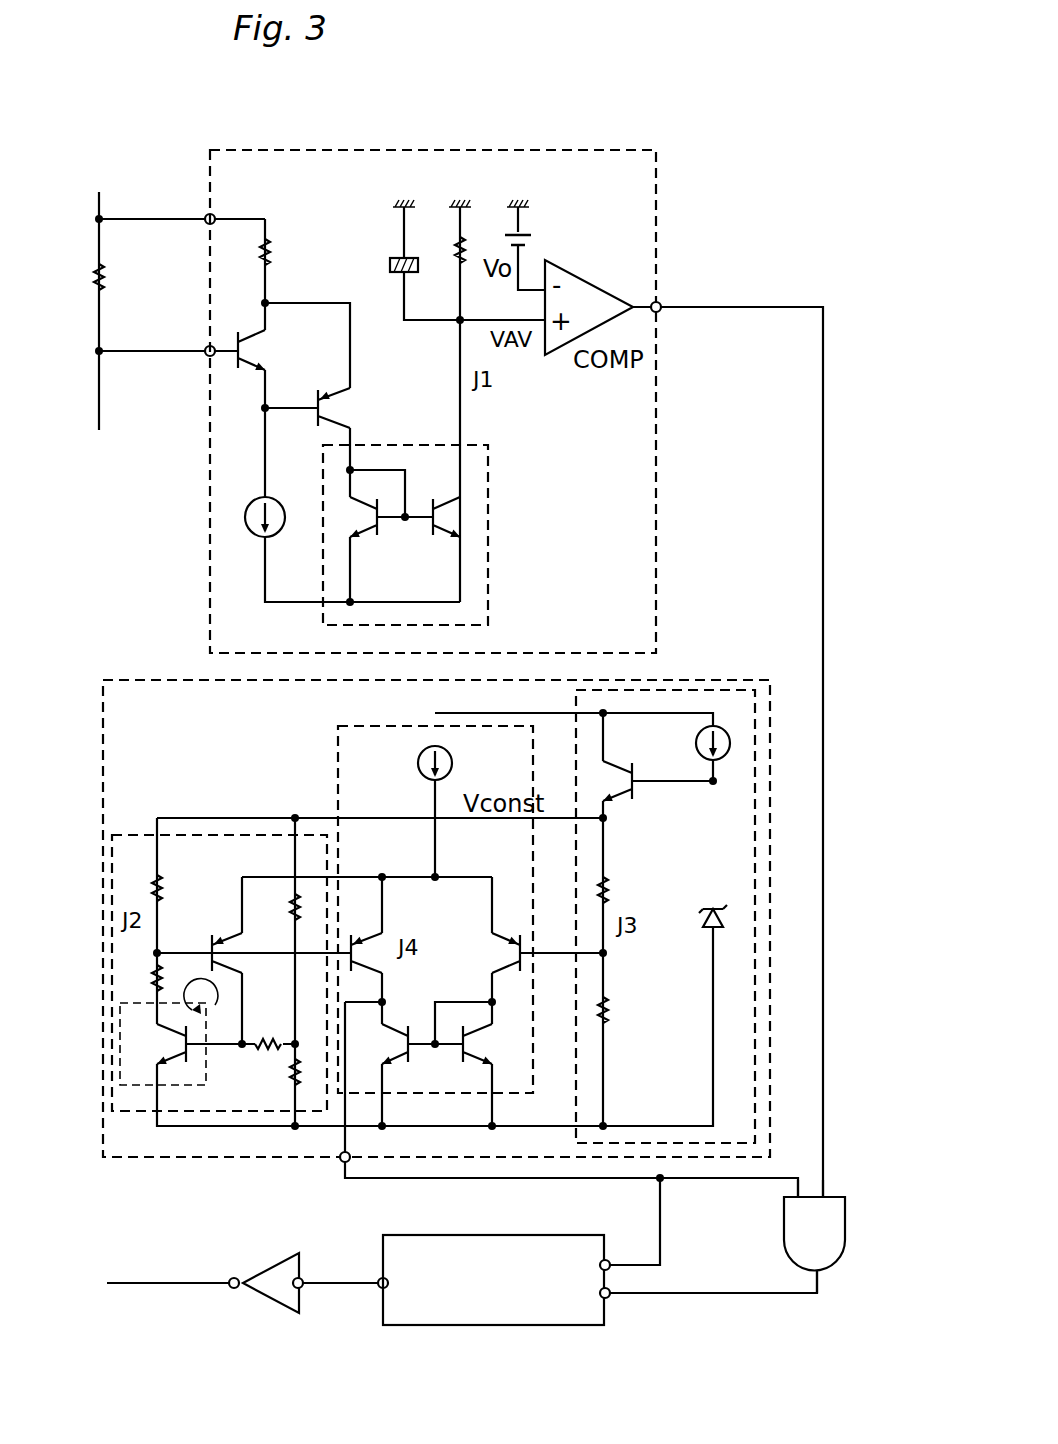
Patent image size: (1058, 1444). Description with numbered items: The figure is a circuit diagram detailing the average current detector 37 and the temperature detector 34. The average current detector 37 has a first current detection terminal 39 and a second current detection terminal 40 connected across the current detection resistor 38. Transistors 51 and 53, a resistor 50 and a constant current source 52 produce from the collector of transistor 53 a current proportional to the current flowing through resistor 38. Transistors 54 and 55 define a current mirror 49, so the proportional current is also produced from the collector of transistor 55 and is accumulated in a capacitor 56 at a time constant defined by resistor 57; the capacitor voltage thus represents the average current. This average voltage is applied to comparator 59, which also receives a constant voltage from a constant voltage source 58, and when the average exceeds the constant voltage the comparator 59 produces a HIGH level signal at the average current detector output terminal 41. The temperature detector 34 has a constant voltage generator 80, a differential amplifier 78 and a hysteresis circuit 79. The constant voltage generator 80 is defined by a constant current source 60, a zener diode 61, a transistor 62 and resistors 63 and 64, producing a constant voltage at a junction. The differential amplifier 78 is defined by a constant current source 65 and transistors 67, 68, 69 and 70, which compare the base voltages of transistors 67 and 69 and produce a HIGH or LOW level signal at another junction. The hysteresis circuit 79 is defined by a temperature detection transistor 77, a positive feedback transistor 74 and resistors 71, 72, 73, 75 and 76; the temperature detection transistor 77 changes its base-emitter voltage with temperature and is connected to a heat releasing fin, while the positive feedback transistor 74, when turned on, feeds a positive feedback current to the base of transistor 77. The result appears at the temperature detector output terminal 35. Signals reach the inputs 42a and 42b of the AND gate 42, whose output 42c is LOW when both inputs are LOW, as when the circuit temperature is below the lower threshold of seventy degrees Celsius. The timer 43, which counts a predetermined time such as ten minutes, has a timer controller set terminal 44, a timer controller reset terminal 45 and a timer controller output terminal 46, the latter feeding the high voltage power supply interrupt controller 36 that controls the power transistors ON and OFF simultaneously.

The temperature detector 34 is at (685, 680).
The temperature detector output terminal 35 is at (342, 1159).
The high voltage power supply interrupt controller 36 is at (272, 1262).
The average current detector 37 is at (515, 150).
The current detection resistor 38 is at (90, 275).
The first current detection terminal 39 is at (204, 357).
The second current detection terminal 40 is at (206, 214).
The average current detector output terminal 41 is at (660, 303).
The AND gate 42 is at (782, 1232).
The input of AND gate 42a is at (830, 1194).
The input of AND gate 42b is at (798, 1190).
The output of AND gate 42c is at (819, 1273).
The timer 43 is at (495, 1235).
The timer controller set terminal 44 is at (610, 1296).
The timer controller reset terminal 45 is at (607, 1262).
The timer controller output terminal 46 is at (381, 1278).
The current mirror 49 is at (489, 497).
The resistor 50 is at (271, 248).
The transistor 51 is at (258, 334).
The constant current source 52 is at (277, 500).
The transistor 53 is at (330, 395).
The transistor 54 is at (360, 540).
The transistor 55 is at (441, 540).
The capacitor 56 is at (393, 262).
The resistor 57 is at (453, 253).
The constant voltage source 58 is at (524, 234).
The comparator 59 is at (604, 292).
The constant current source 60 is at (727, 727).
The zener diode 61 is at (718, 907).
The transistor 62 is at (617, 760).
The resistor 63 is at (613, 887).
The resistor 64 is at (614, 1005).
The constant current source 65 is at (452, 761).
The transistor 67 is at (503, 950).
The transistor 68 is at (482, 1025).
The transistor 69 is at (372, 952).
The transistor 70 is at (392, 1025).
The resistor 71 is at (290, 900).
The resistor 72 is at (289, 1063).
The resistor 73 is at (267, 1052).
The positive feedback transistor 74 is at (237, 940).
The resistor 75 is at (165, 886).
The resistor 76 is at (147, 978).
The temperature detection transistor 77 is at (168, 1042).
The differential amplifier 78 is at (337, 768).
The hysteresis circuit 79 is at (132, 833).
The constant voltage generator 80 is at (757, 843).